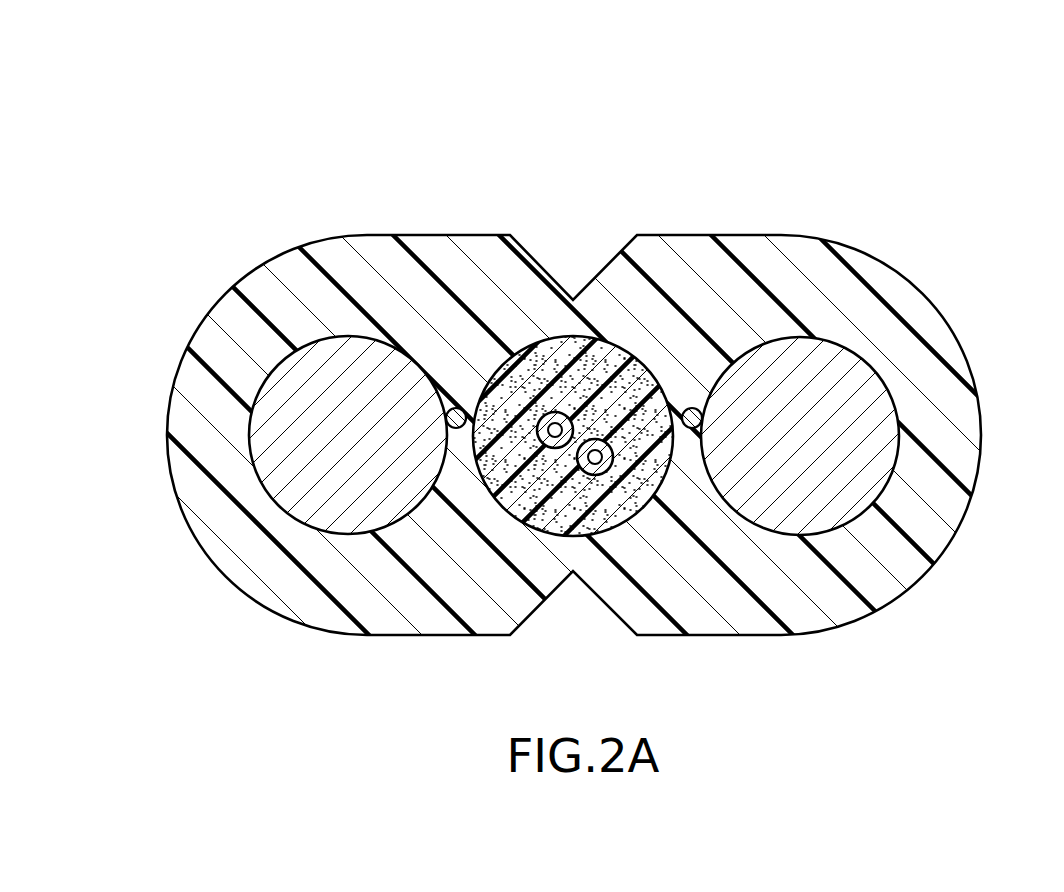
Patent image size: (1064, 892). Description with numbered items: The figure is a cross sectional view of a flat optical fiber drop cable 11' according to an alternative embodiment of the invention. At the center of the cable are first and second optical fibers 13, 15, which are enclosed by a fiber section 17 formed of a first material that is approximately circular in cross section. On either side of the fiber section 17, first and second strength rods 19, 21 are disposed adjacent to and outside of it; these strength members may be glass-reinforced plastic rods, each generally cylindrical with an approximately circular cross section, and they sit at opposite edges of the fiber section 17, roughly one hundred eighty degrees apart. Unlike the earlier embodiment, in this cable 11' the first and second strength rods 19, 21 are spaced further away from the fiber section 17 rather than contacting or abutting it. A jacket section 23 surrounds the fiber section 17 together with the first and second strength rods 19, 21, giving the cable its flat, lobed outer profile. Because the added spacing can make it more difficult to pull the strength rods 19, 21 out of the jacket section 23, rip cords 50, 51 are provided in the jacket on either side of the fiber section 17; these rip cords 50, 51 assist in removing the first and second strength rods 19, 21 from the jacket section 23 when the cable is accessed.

The cable 11' is at (532, 398).
The first optical fiber 13 is at (542, 450).
The second optical fiber 15 is at (606, 468).
The fiber section 17 is at (600, 340).
The first strength rod 19 is at (252, 433).
The second strength rod 21 is at (895, 404).
The jacket section 23 is at (822, 282).
The rip cord 50 is at (459, 408).
The rip cord 51 is at (690, 408).